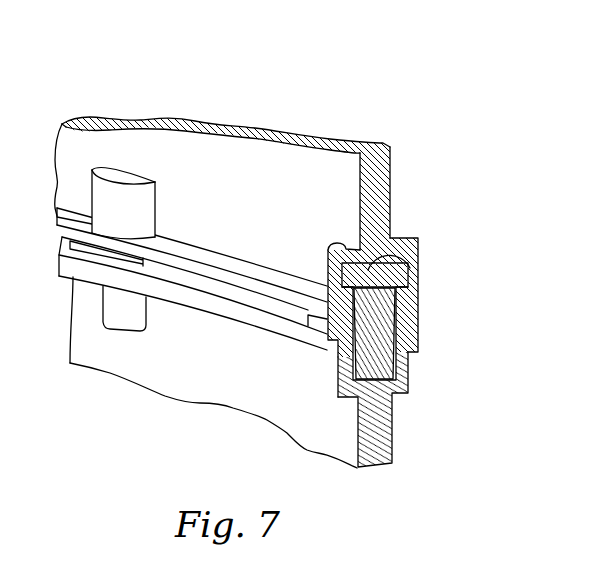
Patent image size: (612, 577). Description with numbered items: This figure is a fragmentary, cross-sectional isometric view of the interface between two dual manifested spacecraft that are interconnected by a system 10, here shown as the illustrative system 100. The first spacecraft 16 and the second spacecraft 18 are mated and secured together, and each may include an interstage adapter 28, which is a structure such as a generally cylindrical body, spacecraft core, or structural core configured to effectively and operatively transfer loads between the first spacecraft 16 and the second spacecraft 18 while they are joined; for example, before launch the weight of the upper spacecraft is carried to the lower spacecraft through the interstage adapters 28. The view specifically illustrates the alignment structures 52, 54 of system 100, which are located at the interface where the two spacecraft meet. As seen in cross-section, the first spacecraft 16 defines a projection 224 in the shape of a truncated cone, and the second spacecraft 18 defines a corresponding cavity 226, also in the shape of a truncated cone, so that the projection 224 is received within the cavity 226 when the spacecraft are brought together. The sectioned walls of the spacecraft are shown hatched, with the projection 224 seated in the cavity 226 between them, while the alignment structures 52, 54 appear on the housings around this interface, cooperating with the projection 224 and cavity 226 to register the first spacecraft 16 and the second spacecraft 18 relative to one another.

The system 10 is at (270, 281).
The first spacecraft 16 is at (328, 470).
The second spacecraft 18 is at (215, 250).
The interstage adapter 28 is at (243, 116).
The alignment structure 52 is at (96, 307).
The alignment structure 54 is at (164, 195).
The system 100 is at (414, 225).
The projection 224 is at (420, 255).
The cavity 226 is at (408, 308).